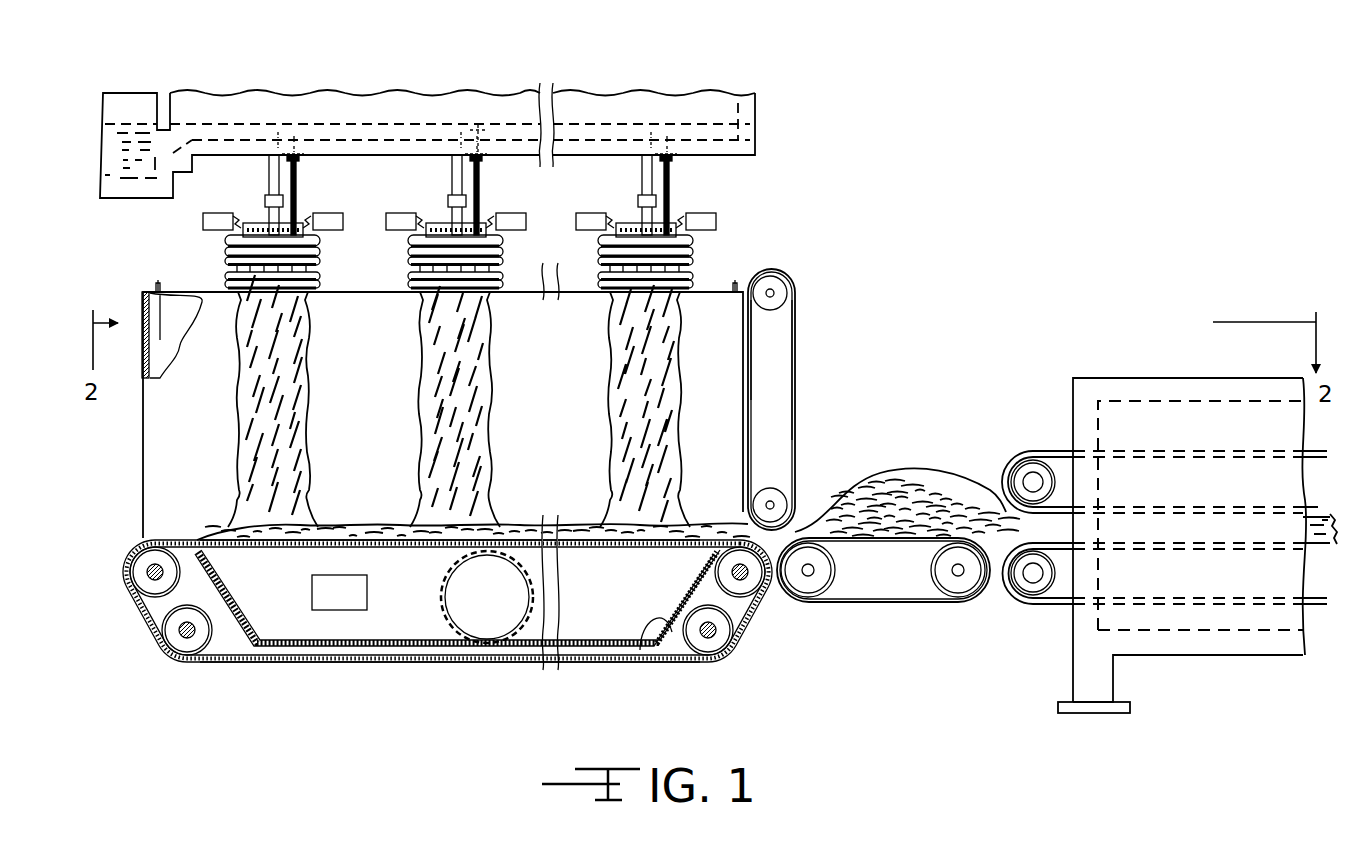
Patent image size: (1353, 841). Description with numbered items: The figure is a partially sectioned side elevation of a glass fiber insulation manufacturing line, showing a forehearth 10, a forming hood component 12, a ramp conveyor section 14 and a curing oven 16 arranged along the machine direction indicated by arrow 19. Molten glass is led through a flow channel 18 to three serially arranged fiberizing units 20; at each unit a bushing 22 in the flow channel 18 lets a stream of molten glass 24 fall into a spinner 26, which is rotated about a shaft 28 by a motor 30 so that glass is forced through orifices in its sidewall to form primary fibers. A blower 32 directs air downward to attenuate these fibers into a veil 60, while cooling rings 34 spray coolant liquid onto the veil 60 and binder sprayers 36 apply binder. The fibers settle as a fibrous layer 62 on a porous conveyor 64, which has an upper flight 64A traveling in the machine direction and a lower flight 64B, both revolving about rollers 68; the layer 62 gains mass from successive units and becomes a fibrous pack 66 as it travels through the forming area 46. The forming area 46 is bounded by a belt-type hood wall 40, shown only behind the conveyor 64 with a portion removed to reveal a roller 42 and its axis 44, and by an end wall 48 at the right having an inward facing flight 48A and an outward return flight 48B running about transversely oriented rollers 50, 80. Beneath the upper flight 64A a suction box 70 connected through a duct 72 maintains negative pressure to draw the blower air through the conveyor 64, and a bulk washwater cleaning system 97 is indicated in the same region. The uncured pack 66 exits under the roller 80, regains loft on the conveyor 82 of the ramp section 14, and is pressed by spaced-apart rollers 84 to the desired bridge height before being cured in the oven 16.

The forehearth 10 is at (663, 80).
The forming hood component 12 is at (815, 360).
The ramp conveyor section 14 is at (897, 458).
The curing oven 16 is at (1165, 366).
The flow channel 18 is at (212, 135).
The machine direction arrow 19 is at (963, 122).
The fiberizing unit 20 is at (479, 210).
The bushing 22 is at (478, 140).
The stream of molten glass 24 is at (319, 195).
The spinner 26 is at (456, 210).
The shaft 28 is at (616, 195).
The motor 30 is at (618, 193).
The blower 32 is at (289, 205).
The cooling ring 34 is at (317, 249).
The binder sprayer 36 is at (317, 272).
The hood wall 40 is at (722, 356).
The roller 42 is at (150, 332).
The axis 44 is at (158, 280).
The forming area 46 is at (587, 312).
The end wall 48 is at (812, 399).
The inward facing flight 48A is at (757, 380).
The outward return flight 48B is at (797, 410).
The roller 50 is at (790, 293).
The veil 60 is at (435, 405).
The fibrous layer 62 is at (355, 530).
The porous conveyor 64 is at (402, 540).
The upper flight 64A is at (330, 548).
The lower flight 64B is at (350, 665).
The fibrous pack 66 is at (585, 525).
The rollers 68 is at (180, 635).
The suction box 70 is at (640, 650).
The duct 72 is at (478, 620).
The roller 80 is at (787, 500).
The conveyor 82 is at (878, 575).
The rollers 84 is at (1038, 472).
The bulk washwater cleaning system 97 is at (333, 593).